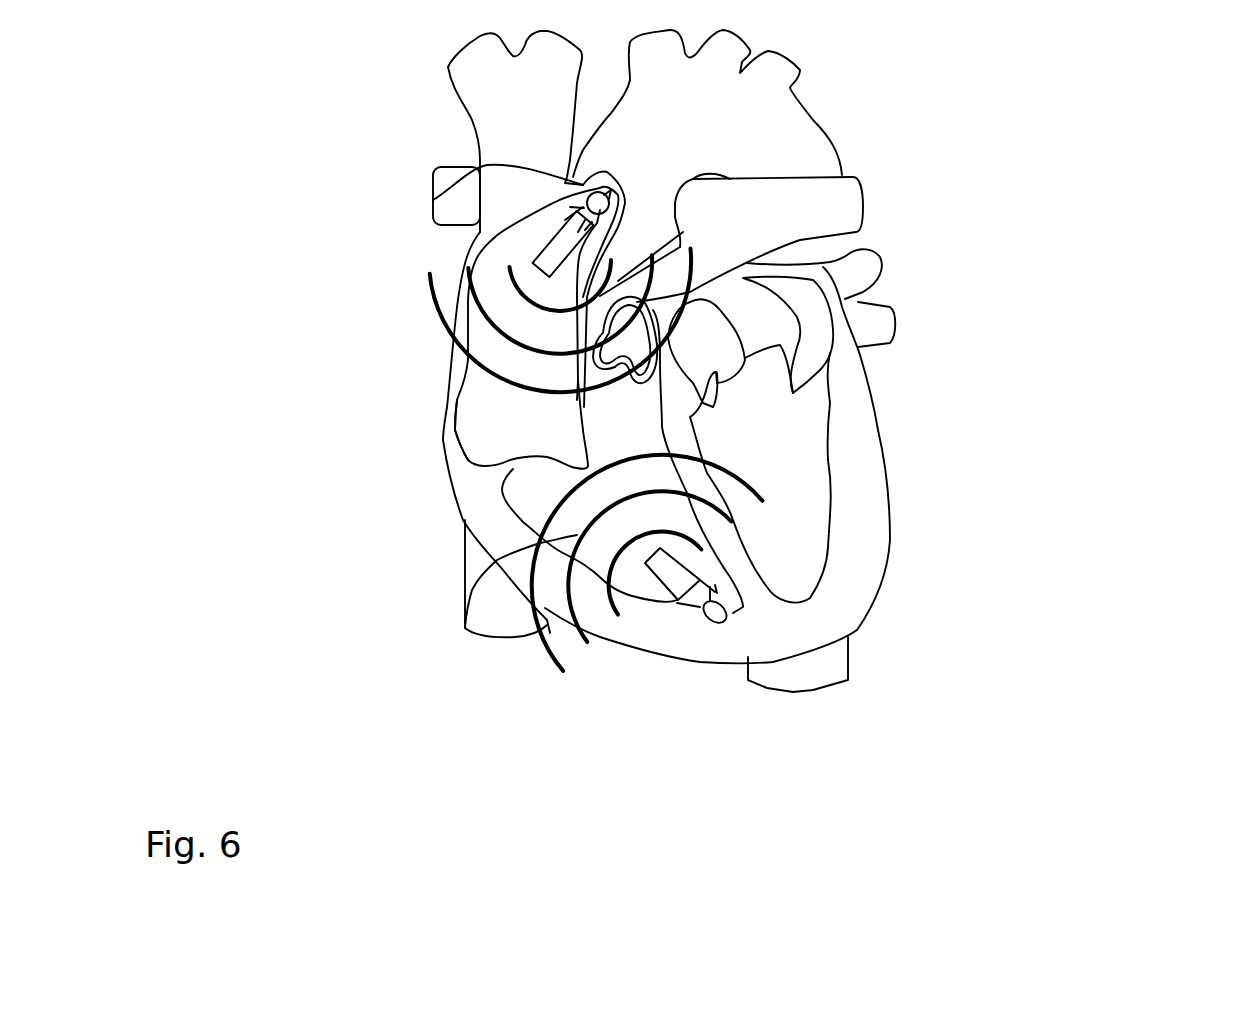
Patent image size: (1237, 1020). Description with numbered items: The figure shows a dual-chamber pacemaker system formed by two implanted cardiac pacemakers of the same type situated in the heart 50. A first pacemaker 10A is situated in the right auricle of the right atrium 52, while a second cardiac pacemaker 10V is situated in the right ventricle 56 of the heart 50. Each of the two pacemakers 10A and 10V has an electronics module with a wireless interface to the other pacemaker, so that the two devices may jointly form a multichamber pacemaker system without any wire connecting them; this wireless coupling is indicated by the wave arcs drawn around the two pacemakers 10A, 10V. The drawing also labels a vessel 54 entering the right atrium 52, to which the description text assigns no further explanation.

The heart 50 is at (1025, 358).
The right atrium 52 is at (497, 430).
The superior vena cava 54 is at (433, 200).
The right ventricle 56 is at (465, 628).
The first pacemaker 10A is at (540, 263).
The second cardiac pacemaker 10V is at (690, 590).